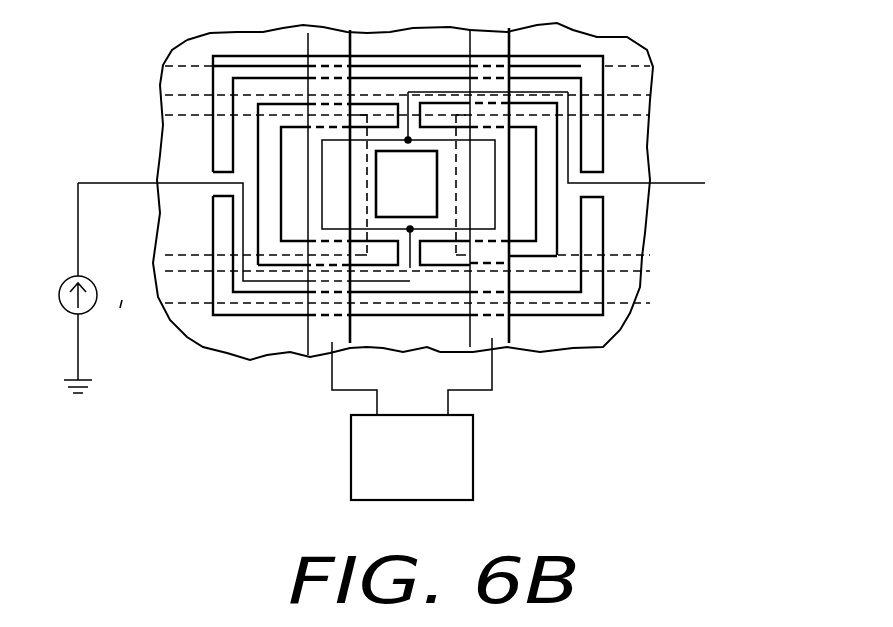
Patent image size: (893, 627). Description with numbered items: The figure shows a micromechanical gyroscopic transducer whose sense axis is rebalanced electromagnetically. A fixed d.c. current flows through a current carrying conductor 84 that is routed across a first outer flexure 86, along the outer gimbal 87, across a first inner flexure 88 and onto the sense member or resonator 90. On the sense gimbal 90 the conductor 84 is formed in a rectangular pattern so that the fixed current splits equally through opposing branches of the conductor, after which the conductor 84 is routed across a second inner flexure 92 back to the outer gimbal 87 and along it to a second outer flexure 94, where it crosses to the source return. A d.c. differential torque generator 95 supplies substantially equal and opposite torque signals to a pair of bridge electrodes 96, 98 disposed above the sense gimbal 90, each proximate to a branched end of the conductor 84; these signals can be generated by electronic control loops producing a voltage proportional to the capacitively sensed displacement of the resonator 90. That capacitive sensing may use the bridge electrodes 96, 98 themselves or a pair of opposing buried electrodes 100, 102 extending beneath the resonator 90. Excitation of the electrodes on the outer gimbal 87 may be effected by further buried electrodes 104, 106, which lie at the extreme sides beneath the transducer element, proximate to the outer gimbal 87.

The current carrying conductor 84 is at (418, 88).
The first outer flexure 86 is at (213, 195).
The outer gimbal 87 is at (268, 87).
The first inner flexure 88 is at (410, 268).
The sense member or resonator 90 is at (520, 137).
The second inner flexure 92 is at (399, 102).
The second outer flexure 94 is at (593, 192).
The d.c. differential torque generator 95 is at (453, 500).
The bridge electrode 96 is at (328, 40).
The bridge electrode 98 is at (490, 40).
The buried electrode 100 is at (177, 135).
The buried electrode 102 is at (648, 147).
The buried electrode 104 is at (177, 78).
The buried electrode 106 is at (178, 285).